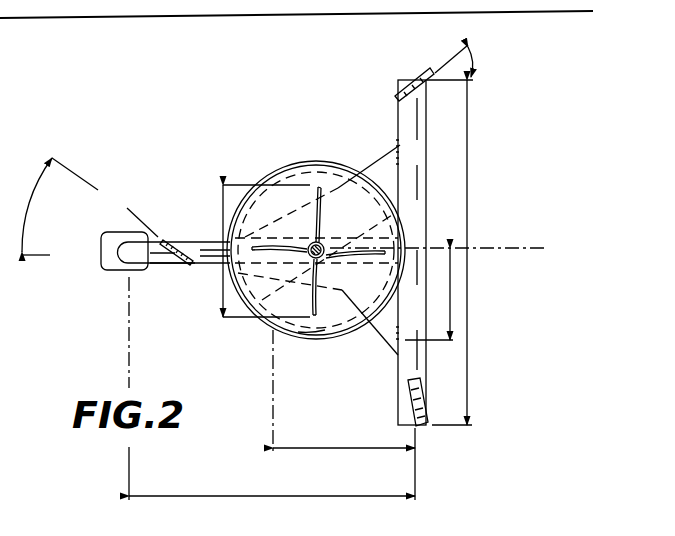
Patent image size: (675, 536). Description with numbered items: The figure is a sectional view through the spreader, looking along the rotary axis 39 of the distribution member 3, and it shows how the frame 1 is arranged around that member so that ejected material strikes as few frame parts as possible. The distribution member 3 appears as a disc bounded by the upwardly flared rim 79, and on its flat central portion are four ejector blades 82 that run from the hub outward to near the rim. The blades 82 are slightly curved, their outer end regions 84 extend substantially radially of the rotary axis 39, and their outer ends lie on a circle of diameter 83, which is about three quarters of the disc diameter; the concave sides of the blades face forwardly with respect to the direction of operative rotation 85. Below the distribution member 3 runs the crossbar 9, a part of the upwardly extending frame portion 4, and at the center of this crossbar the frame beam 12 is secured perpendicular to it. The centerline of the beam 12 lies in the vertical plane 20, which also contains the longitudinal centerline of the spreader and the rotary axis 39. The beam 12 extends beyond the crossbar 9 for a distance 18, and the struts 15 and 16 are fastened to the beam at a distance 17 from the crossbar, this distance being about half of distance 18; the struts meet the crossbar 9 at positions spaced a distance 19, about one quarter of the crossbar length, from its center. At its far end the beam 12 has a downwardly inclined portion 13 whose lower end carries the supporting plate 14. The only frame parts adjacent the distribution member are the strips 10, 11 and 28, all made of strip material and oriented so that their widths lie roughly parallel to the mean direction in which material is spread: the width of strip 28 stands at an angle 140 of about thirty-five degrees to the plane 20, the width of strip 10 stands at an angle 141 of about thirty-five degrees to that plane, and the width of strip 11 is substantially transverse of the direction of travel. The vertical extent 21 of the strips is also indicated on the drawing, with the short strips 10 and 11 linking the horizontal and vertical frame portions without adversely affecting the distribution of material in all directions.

The frame 1 is at (168, 266).
The distribution member 3 is at (260, 318).
The upwardly extending frame portion 4 is at (457, 377).
The crossbar 9 is at (410, 176).
The strip 10 is at (415, 73).
The strip 11 is at (408, 397).
The frame beam 12 is at (204, 240).
The downwardly inclined portion 13 is at (114, 250).
The supporting plate 14 is at (116, 232).
The strut 15 is at (378, 152).
The strut 16 is at (383, 338).
The distance 17 is at (348, 444).
The distance 18 is at (284, 492).
The distance 19 is at (452, 292).
The vertical plane 20 is at (545, 247).
The dimension 21 is at (468, 195).
The strip 28 is at (178, 238).
The rotary axis 39 is at (325, 241).
The rim 79 is at (282, 327).
The ejector blades 82 is at (316, 216).
The diameter 83 is at (222, 280).
The end regions 84 is at (310, 322).
The direction of operative rotation 85 is at (318, 130).
The angle 140 is at (32, 205).
The angle 141 is at (470, 57).